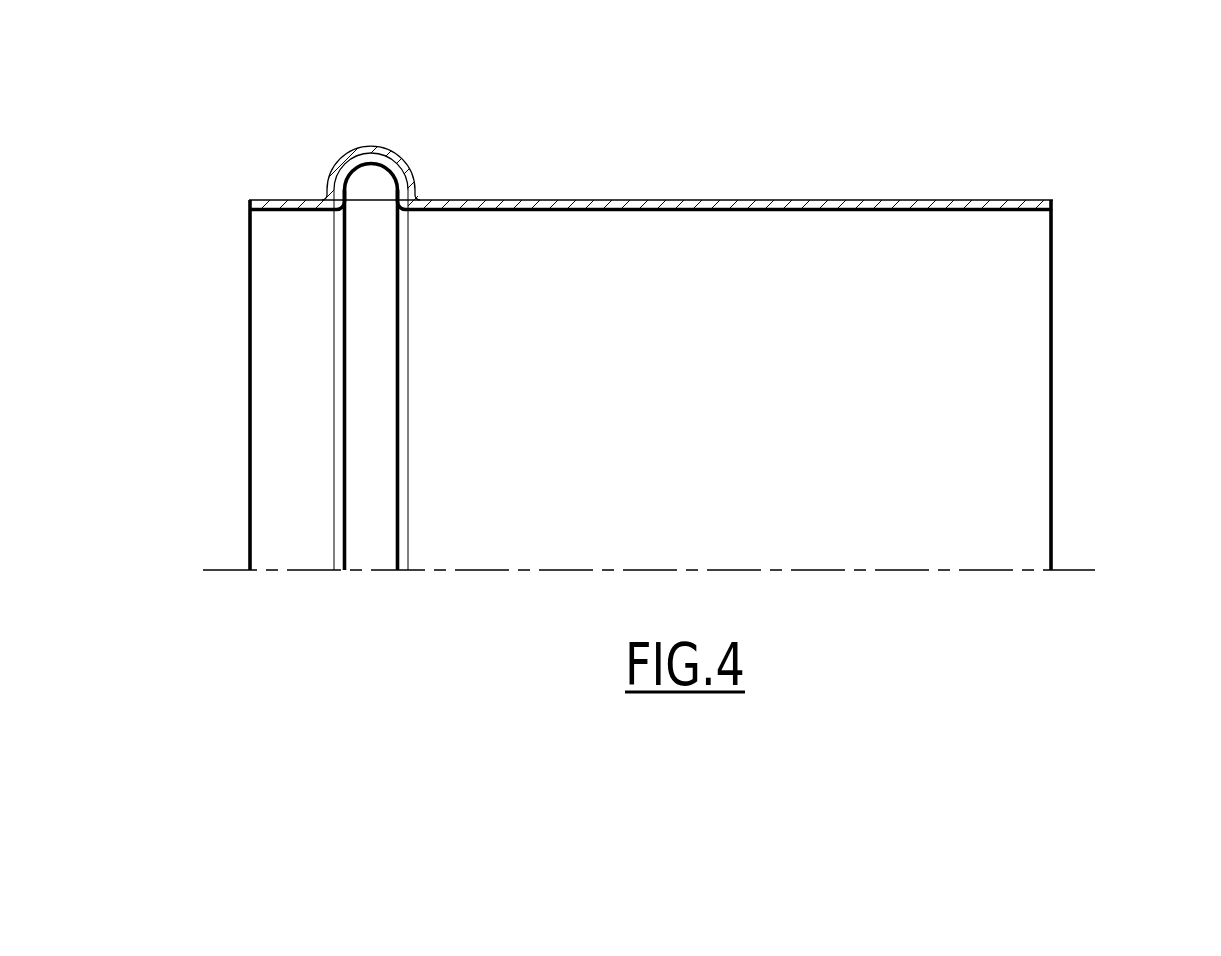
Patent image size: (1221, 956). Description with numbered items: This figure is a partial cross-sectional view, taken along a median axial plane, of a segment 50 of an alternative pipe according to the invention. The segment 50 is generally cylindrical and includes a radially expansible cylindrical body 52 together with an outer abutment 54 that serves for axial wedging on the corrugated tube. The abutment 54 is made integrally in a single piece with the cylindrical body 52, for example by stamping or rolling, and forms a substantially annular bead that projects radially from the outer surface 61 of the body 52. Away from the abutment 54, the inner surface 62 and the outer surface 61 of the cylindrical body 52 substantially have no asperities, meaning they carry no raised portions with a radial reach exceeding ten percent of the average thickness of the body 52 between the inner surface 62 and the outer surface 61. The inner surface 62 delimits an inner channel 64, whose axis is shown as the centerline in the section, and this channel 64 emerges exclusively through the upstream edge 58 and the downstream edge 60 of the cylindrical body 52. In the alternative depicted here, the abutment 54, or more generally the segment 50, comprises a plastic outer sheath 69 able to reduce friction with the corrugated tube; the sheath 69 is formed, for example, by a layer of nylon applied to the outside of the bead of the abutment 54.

The segment 50 is at (849, 149).
The cylindrical body 52 is at (920, 505).
The outer abutment 54 is at (330, 153).
The upstream edge 58 is at (249, 332).
The downstream edge 60 is at (1053, 397).
The outer surface 61 is at (671, 200).
The inner surface 62 is at (980, 212).
The inner channel 64 is at (503, 520).
The plastic outer sheath 69 is at (401, 162).